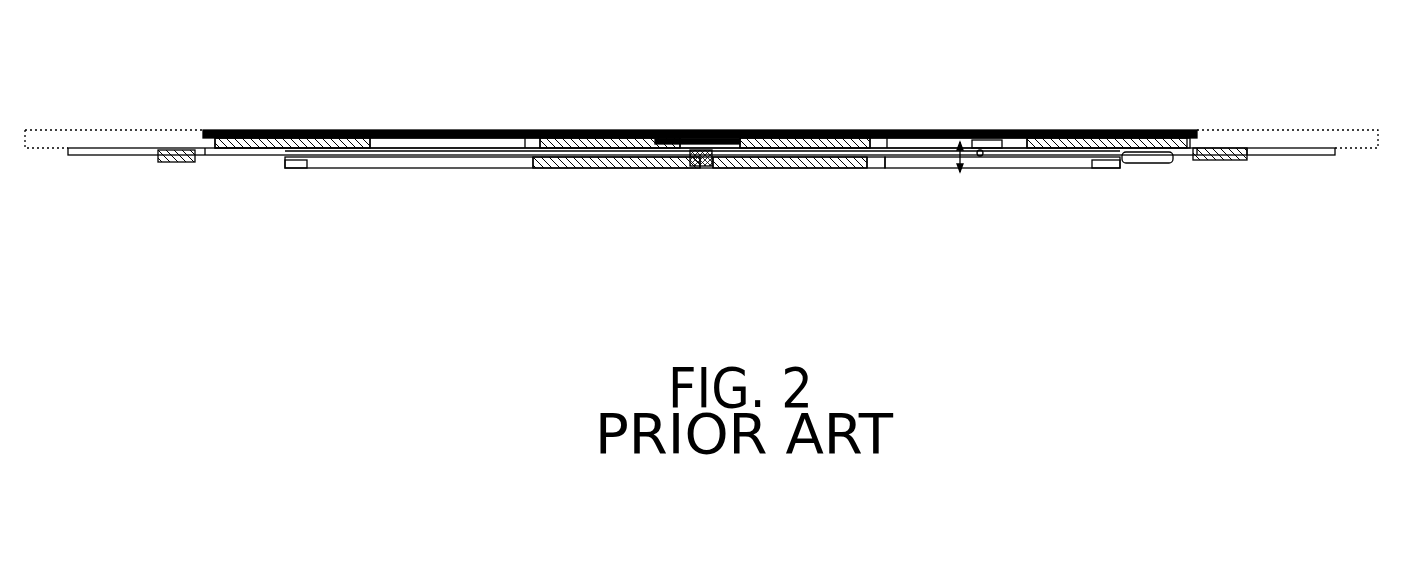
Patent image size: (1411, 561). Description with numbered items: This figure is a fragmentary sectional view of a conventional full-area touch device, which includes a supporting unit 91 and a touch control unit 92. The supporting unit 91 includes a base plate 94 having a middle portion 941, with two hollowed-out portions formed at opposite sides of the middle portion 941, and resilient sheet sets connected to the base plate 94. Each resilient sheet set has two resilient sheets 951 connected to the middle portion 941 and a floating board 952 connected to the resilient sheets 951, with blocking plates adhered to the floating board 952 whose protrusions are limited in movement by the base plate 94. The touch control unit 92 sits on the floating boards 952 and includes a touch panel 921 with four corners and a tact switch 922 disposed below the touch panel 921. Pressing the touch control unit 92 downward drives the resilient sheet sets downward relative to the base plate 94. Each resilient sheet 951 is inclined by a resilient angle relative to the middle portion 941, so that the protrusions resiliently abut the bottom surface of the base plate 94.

The supporting unit 91 is at (1075, 177).
The touch control unit 92 is at (1172, 130).
The touch panel 921 is at (672, 137).
The tact switch 922 is at (702, 148).
The base plate 94 is at (1207, 158).
The middle portion 941 is at (773, 168).
The resilient sheet 951 is at (1025, 170).
The floating board 952 is at (1133, 164).